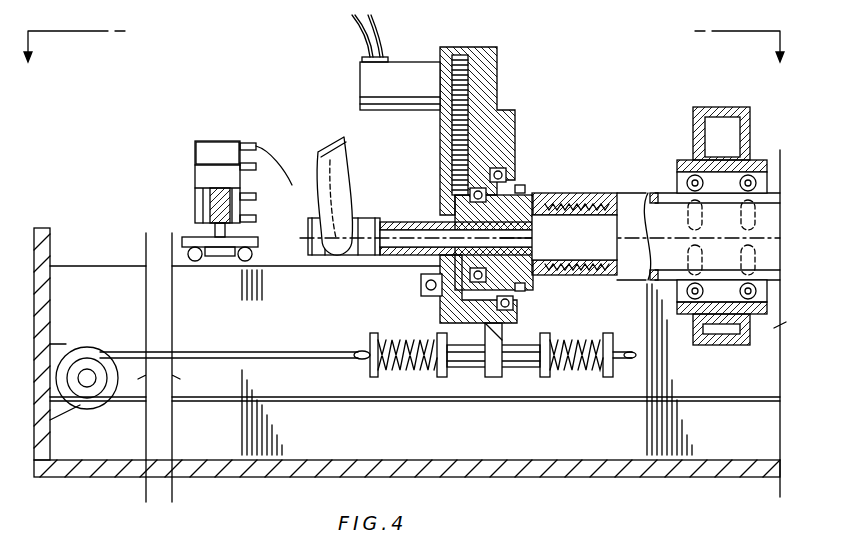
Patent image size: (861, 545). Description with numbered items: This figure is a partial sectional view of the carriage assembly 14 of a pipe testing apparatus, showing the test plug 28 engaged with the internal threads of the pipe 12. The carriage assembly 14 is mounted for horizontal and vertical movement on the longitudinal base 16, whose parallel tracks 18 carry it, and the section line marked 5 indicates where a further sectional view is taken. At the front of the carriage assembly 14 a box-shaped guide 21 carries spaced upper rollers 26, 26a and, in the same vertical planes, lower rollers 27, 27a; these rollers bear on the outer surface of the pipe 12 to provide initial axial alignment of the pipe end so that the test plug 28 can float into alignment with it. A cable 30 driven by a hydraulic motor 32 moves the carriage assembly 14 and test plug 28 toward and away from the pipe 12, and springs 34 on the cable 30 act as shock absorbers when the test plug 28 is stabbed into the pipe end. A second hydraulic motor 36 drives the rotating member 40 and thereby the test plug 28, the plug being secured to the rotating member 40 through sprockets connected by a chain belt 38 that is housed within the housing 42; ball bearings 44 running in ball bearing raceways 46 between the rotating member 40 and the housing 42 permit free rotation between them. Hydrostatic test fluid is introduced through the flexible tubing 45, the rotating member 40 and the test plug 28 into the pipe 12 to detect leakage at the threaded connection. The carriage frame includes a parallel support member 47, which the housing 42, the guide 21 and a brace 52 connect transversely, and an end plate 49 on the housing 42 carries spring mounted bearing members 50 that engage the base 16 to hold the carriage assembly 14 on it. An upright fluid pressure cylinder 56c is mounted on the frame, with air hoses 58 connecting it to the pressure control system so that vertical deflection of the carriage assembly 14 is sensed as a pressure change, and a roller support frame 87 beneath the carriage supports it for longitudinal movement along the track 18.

The section line 5 is at (404, 58).
The pipe 12 is at (652, 186).
The carriage assembly 14 is at (527, 80).
The base 16 is at (560, 480).
The track 18 is at (98, 265).
The box-shaped guide 21 is at (715, 107).
The upper roller 26 is at (693, 180).
The upper roller 26a is at (750, 180).
The lower roller 27 is at (695, 300).
The lower roller 27a is at (750, 300).
The test plug 28 is at (585, 228).
The cable 30 is at (322, 360).
The hydraulic motor 32 is at (90, 348).
The spring 34 is at (562, 376).
The hydraulic motor 36 is at (378, 80).
The chain belt 38 is at (455, 135).
The rotating member 40 is at (450, 212).
The housing 42 is at (497, 55).
The ball bearing 44 is at (502, 183).
The flexible tubing 45 is at (330, 155).
The ball bearing raceway 46 is at (518, 312).
The support member 47 is at (297, 187).
The end plate 49 is at (442, 312).
The spring mounted bearing member 50 is at (420, 287).
The brace 52 is at (195, 188).
The fluid pressure cylinder 56c is at (218, 148).
The air hose 58 is at (256, 147).
The roller support frame 87 is at (178, 238).